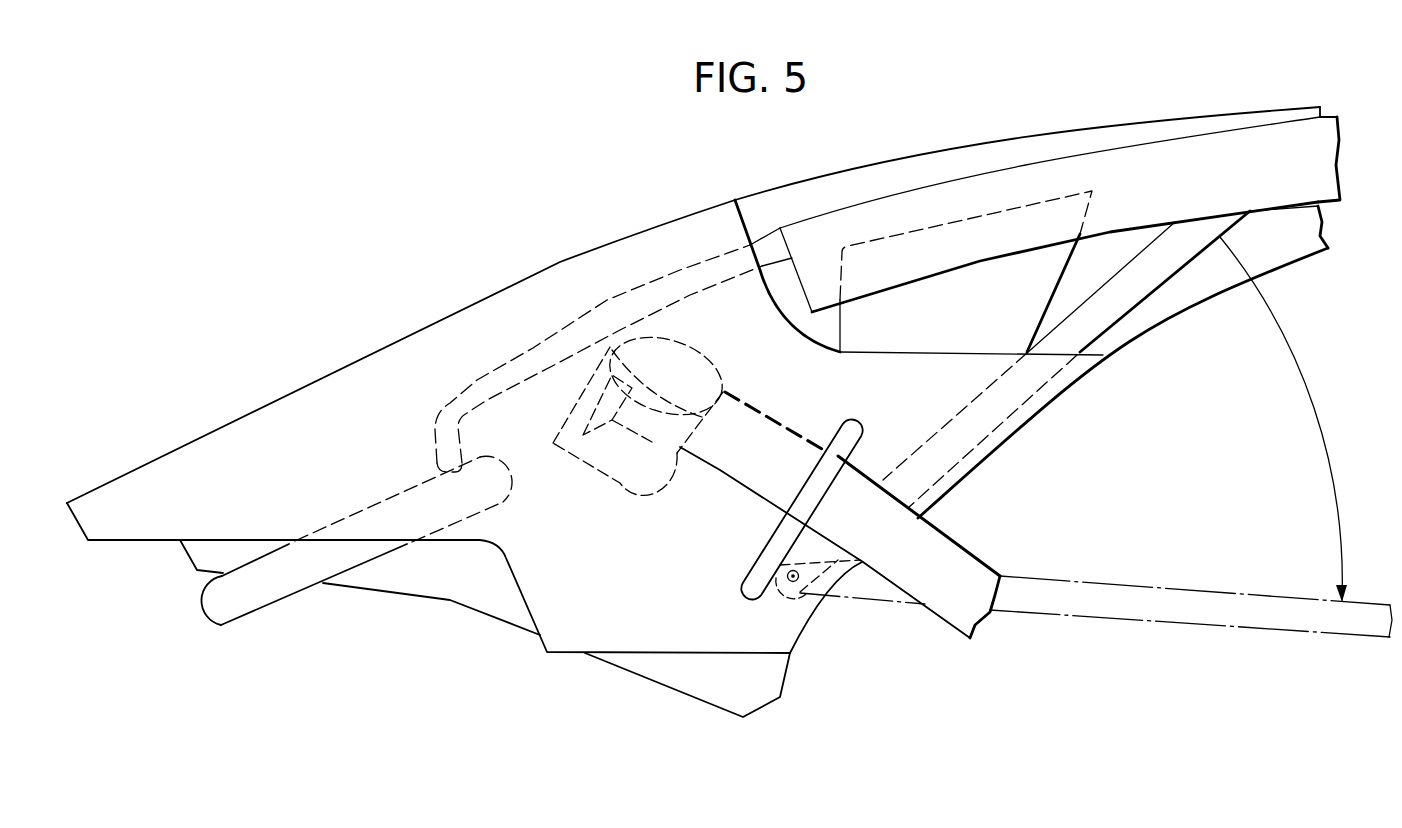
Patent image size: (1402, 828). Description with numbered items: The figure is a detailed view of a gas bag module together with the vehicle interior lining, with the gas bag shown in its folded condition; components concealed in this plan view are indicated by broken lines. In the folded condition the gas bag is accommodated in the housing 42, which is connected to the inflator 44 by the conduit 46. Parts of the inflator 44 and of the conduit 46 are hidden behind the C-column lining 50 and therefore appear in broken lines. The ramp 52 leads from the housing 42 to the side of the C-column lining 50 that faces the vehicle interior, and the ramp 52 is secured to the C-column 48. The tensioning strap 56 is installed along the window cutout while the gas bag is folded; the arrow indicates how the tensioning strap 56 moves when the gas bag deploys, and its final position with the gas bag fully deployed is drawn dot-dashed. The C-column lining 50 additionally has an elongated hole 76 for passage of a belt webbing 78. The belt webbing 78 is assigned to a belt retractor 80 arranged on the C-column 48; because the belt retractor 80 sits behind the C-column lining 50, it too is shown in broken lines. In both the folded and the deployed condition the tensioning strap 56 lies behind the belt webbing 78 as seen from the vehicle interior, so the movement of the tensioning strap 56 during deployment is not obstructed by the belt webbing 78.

The housing 42 is at (1207, 155).
The inflator 44 is at (222, 606).
The conduit 46 is at (559, 337).
The C-column 48 is at (832, 192).
The C-column lining 50 is at (280, 420).
The ramp 52 is at (977, 275).
The tensioning strap 56 is at (1116, 305).
The elongated hole 76 is at (753, 583).
The belt webbing 78 is at (950, 600).
The belt retractor 80 is at (619, 483).